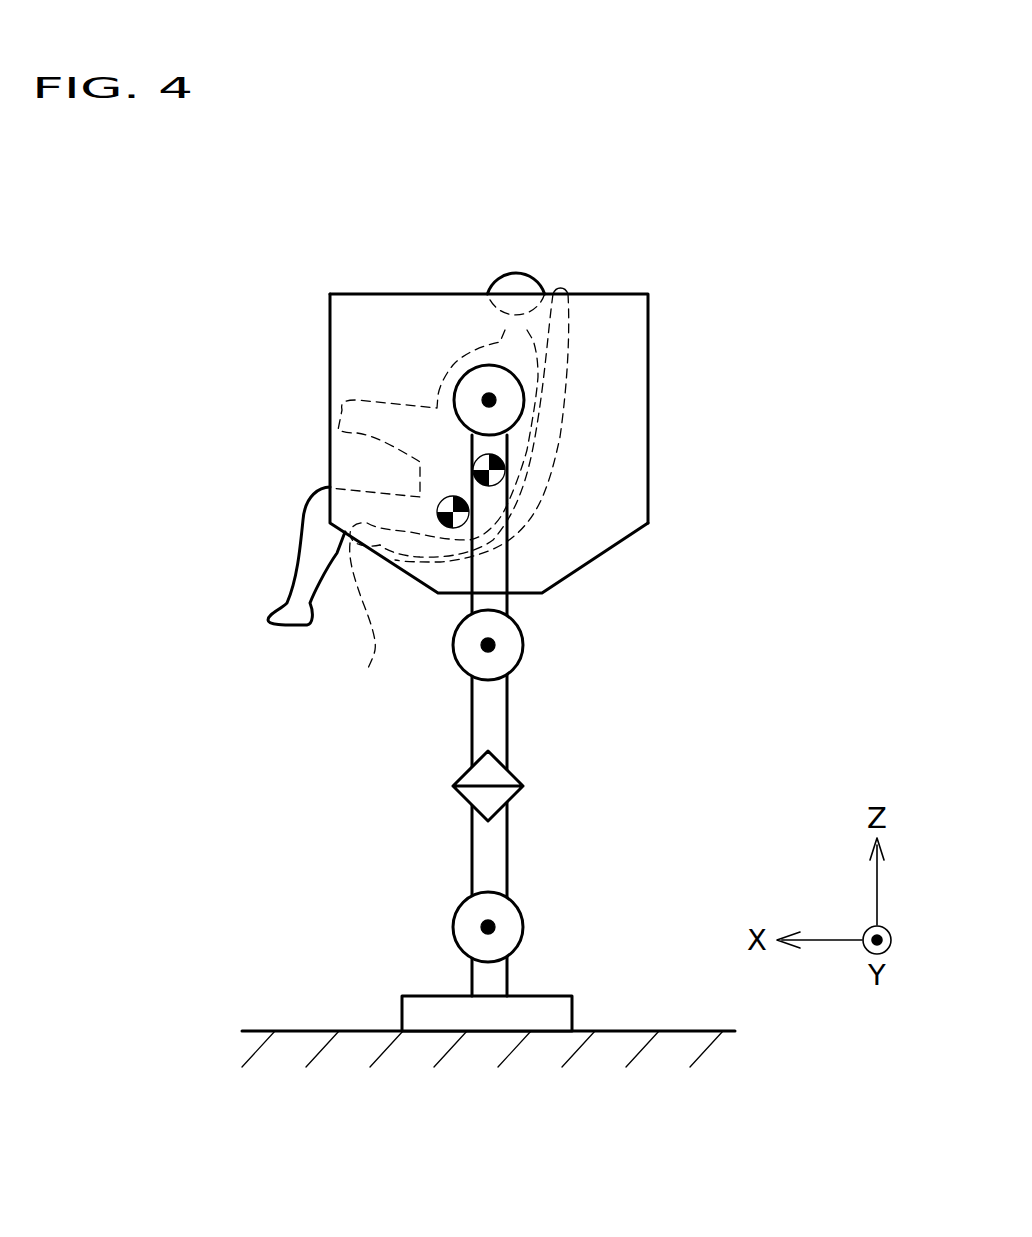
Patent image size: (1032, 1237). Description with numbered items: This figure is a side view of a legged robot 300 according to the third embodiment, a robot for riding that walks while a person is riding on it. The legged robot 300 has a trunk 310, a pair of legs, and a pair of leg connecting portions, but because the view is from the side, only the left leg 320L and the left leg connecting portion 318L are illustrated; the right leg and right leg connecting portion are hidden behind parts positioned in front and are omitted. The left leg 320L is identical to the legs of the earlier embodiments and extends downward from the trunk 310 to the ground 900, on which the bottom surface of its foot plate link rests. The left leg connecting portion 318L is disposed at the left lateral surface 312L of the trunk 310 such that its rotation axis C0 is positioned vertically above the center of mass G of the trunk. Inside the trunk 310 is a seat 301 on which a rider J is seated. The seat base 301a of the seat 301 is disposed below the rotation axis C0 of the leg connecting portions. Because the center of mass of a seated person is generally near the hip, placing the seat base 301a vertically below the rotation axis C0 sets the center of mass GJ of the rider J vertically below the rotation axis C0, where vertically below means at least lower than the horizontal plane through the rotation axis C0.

The legged robot 300 is at (486, 616).
The left lateral surface 312L is at (613, 307).
The seat 301 is at (573, 357).
The trunk 310 is at (678, 425).
The rotation axis C0 is at (489, 400).
The left leg connecting portion 318L is at (454, 402).
The center of mass of the rider GJ is at (443, 500).
The center of mass of the trunk G is at (503, 482).
The rider J is at (373, 449).
The seat base 301a is at (371, 626).
The left leg 320L is at (542, 739).
The ground 900 is at (625, 1031).